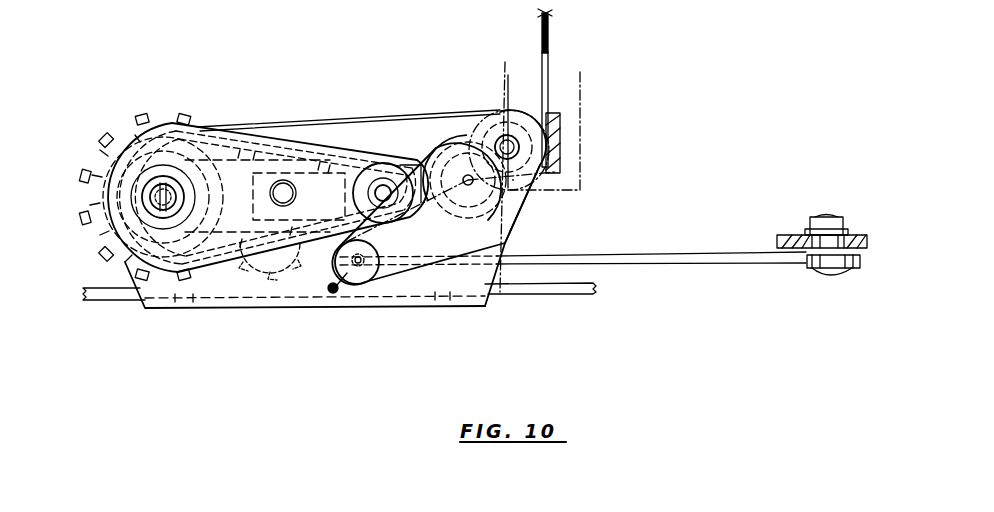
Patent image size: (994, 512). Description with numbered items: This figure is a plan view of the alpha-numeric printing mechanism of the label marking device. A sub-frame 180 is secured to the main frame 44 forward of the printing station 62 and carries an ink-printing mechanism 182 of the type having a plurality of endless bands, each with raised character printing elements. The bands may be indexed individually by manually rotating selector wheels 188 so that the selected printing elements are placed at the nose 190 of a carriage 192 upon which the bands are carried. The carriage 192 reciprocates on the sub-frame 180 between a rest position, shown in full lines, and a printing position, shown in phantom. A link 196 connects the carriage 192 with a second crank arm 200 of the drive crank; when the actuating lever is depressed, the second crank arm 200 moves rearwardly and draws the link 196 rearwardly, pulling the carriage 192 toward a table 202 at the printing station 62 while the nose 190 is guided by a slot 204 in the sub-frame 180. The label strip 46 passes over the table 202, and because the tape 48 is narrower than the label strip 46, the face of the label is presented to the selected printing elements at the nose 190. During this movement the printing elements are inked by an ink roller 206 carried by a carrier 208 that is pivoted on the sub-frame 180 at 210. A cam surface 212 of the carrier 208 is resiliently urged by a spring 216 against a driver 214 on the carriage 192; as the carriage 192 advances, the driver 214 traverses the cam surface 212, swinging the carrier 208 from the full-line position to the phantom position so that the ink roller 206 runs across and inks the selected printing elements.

The frame 44 is at (553, 292).
The label strip 46 is at (544, 72).
The tape 48 is at (542, 22).
The printing station 62 is at (585, 78).
The sub-frame 180 is at (396, 306).
The ink-printing mechanism 182 is at (238, 76).
The selector wheels 188 is at (153, 120).
The nose 190 is at (414, 162).
The carriage 192 is at (330, 100).
The link 196 is at (695, 268).
The second crank arm 200 is at (869, 236).
The table 202 is at (566, 124).
The slot 204 is at (412, 140).
The ink roller 206 is at (457, 263).
The carrier 208 is at (458, 294).
The pivot 210 is at (362, 287).
The cam surface 212 is at (432, 148).
The driver 214 is at (265, 196).
The spring 216 is at (317, 290).